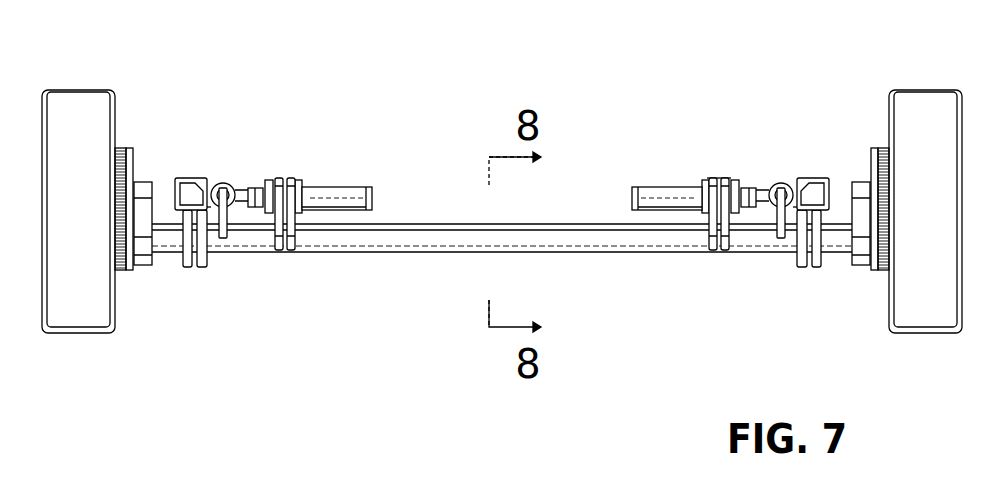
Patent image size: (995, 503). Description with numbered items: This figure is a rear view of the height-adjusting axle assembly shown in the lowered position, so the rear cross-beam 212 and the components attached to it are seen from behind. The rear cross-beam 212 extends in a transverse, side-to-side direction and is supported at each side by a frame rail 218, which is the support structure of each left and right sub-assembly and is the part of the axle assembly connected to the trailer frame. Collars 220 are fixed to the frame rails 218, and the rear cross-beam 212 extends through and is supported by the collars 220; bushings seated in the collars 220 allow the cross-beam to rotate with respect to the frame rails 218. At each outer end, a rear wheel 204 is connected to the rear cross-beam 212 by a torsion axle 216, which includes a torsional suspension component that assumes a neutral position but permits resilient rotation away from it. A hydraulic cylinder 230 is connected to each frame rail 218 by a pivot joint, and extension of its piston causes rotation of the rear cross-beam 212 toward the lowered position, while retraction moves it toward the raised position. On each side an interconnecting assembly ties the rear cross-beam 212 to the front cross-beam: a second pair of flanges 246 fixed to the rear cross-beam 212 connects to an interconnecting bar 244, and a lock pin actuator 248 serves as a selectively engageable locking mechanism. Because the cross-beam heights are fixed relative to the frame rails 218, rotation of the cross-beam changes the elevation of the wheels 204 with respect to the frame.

The rear wheel 204 is at (87, 95).
The rear cross-beam 212 is at (548, 235).
The torsion axle 216 is at (142, 265).
The frame rail 218 is at (178, 178).
The collar 220 is at (209, 262).
The hydraulic cylinder 230 is at (225, 180).
The interconnecting bar 244 is at (730, 178).
The second pair of flanges 246 is at (277, 250).
The lock pin actuator 248 is at (352, 190).